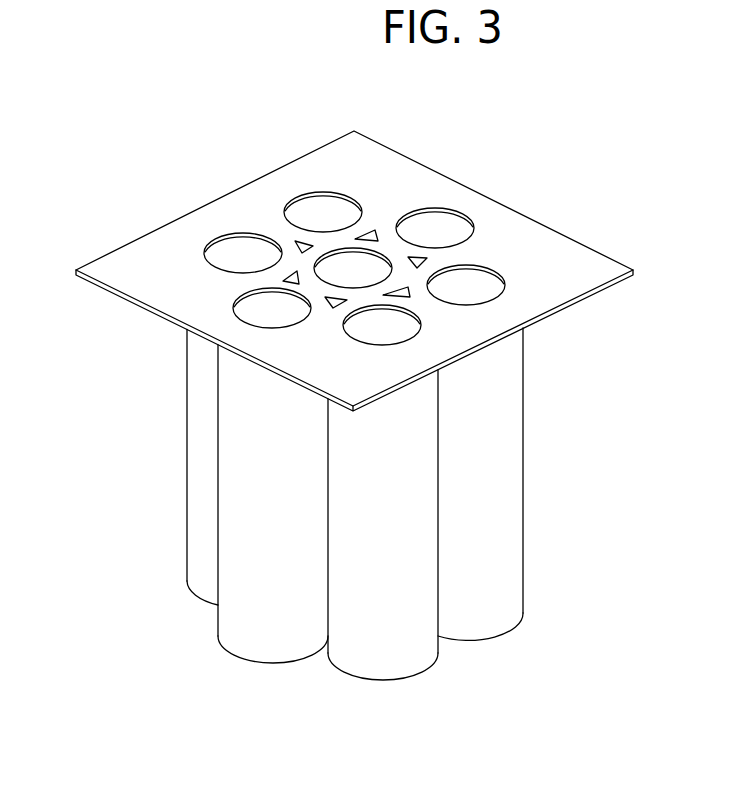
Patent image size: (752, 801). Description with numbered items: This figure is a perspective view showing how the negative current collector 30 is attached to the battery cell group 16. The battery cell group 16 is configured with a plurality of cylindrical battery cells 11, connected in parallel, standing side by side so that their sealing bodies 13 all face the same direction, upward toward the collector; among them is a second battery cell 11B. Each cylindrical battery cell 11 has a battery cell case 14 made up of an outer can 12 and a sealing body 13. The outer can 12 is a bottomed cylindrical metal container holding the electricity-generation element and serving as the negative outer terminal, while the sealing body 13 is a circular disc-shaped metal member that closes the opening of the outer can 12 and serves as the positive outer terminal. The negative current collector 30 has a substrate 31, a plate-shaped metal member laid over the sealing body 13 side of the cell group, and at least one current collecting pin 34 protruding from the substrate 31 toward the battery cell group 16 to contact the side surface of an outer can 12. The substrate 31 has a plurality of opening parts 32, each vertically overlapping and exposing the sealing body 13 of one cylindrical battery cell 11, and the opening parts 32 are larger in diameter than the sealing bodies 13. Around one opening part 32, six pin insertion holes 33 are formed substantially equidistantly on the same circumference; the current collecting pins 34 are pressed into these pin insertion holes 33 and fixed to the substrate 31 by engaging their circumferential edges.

The cylindrical battery cell 11 is at (188, 497).
The second battery cell 11B is at (202, 492).
The outer can 12 is at (512, 395).
The sealing body 13 is at (311, 214).
The battery cell case 14 is at (607, 303).
The battery cell group 16 is at (527, 474).
The negative current collector 30 is at (598, 252).
The substrate 31 is at (158, 243).
The opening part 32 is at (350, 228).
The pin insertion hole 33 is at (272, 234).
The current collecting pin 34 is at (296, 247).